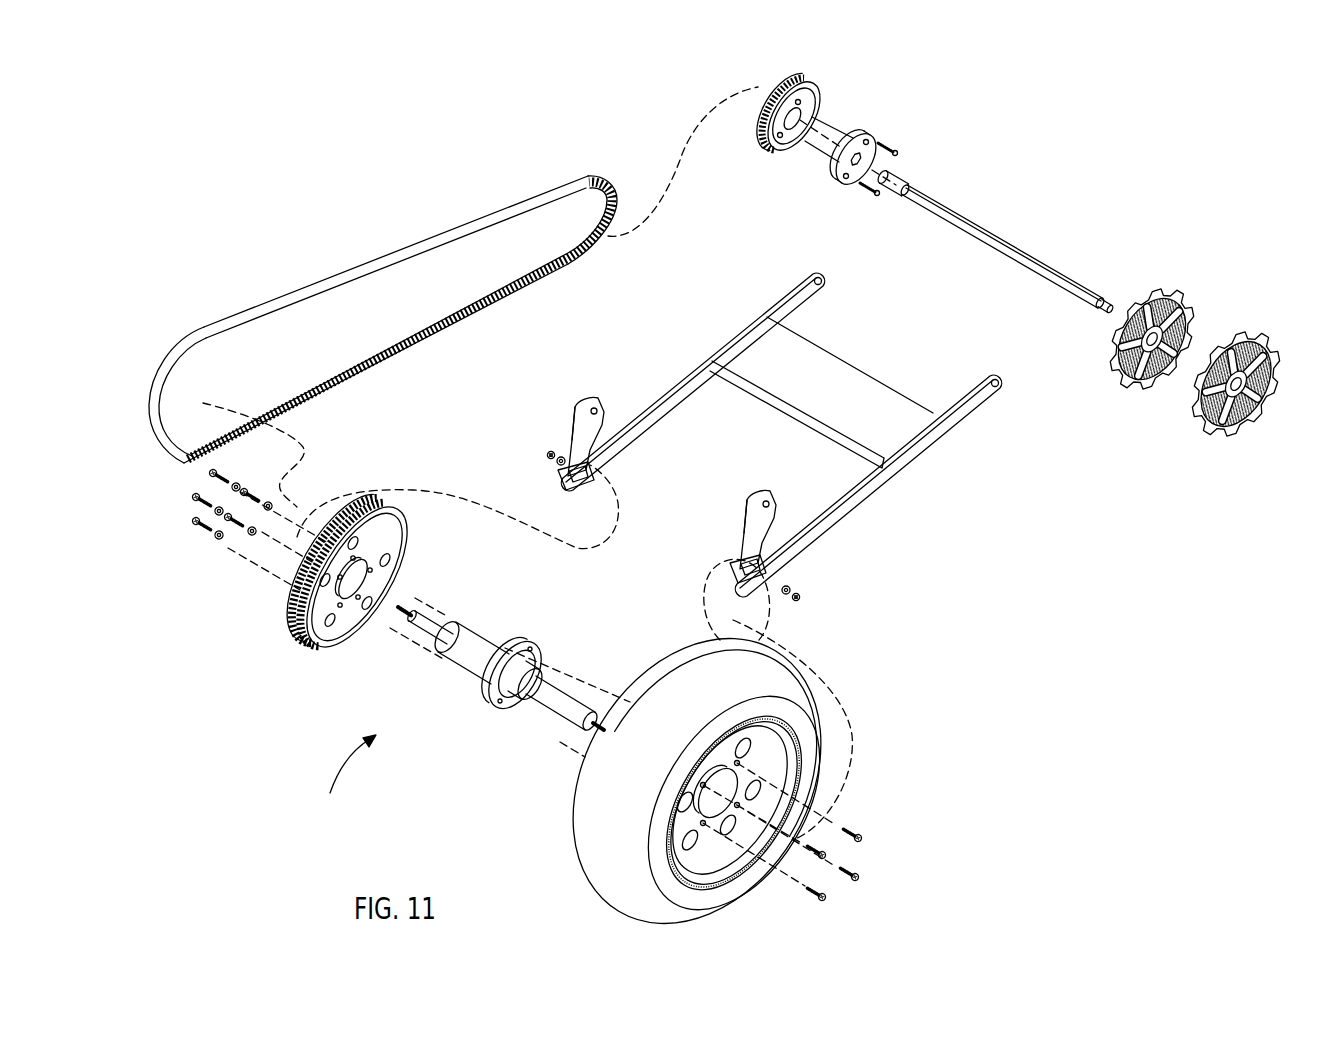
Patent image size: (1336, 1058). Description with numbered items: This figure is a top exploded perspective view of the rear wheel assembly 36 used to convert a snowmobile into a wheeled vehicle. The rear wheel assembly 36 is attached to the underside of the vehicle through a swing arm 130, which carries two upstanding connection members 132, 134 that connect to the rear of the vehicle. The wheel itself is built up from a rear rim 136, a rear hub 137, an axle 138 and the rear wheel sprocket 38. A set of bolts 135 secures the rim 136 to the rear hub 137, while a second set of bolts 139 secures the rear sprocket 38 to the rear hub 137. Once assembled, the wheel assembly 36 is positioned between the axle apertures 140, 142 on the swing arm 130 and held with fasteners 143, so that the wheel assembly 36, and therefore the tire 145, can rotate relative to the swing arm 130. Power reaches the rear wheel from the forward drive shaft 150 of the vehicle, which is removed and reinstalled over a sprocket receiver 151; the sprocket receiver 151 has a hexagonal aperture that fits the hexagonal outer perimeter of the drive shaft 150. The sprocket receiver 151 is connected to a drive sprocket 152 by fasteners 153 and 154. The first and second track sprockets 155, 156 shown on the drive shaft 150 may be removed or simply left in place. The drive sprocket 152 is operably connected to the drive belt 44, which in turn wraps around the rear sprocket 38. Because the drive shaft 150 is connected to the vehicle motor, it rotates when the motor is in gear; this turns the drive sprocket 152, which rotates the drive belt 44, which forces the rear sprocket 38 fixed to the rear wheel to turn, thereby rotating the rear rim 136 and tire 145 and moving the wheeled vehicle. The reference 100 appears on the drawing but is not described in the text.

The rear wheel assembly 36 is at (347, 779).
The rear wheel sprocket 38 is at (346, 645).
The drive belt 44 is at (203, 336).
The wheel 100 is at (603, 860).
The swing arm 130 is at (878, 480).
The upstanding connection member 132 is at (576, 438).
The upstanding connection member 134 is at (748, 530).
The bolts 135 is at (826, 857).
The rear rim 136 is at (785, 762).
The rear hub 137 is at (467, 660).
The axle 138 is at (557, 724).
The bolts 139 is at (193, 521).
The axle aperture 140 is at (575, 488).
The axle aperture 142 is at (748, 598).
The fasteners 143 is at (546, 457).
The tire 145 is at (733, 888).
The forward drive shaft 150 is at (945, 206).
The sprocket receiver 151 is at (863, 136).
The drive sprocket 152 is at (780, 150).
The fastener 153 is at (893, 148).
The fastener 154 is at (867, 200).
The first track sprocket 155 is at (1160, 300).
The second track sprocket 156 is at (1242, 342).